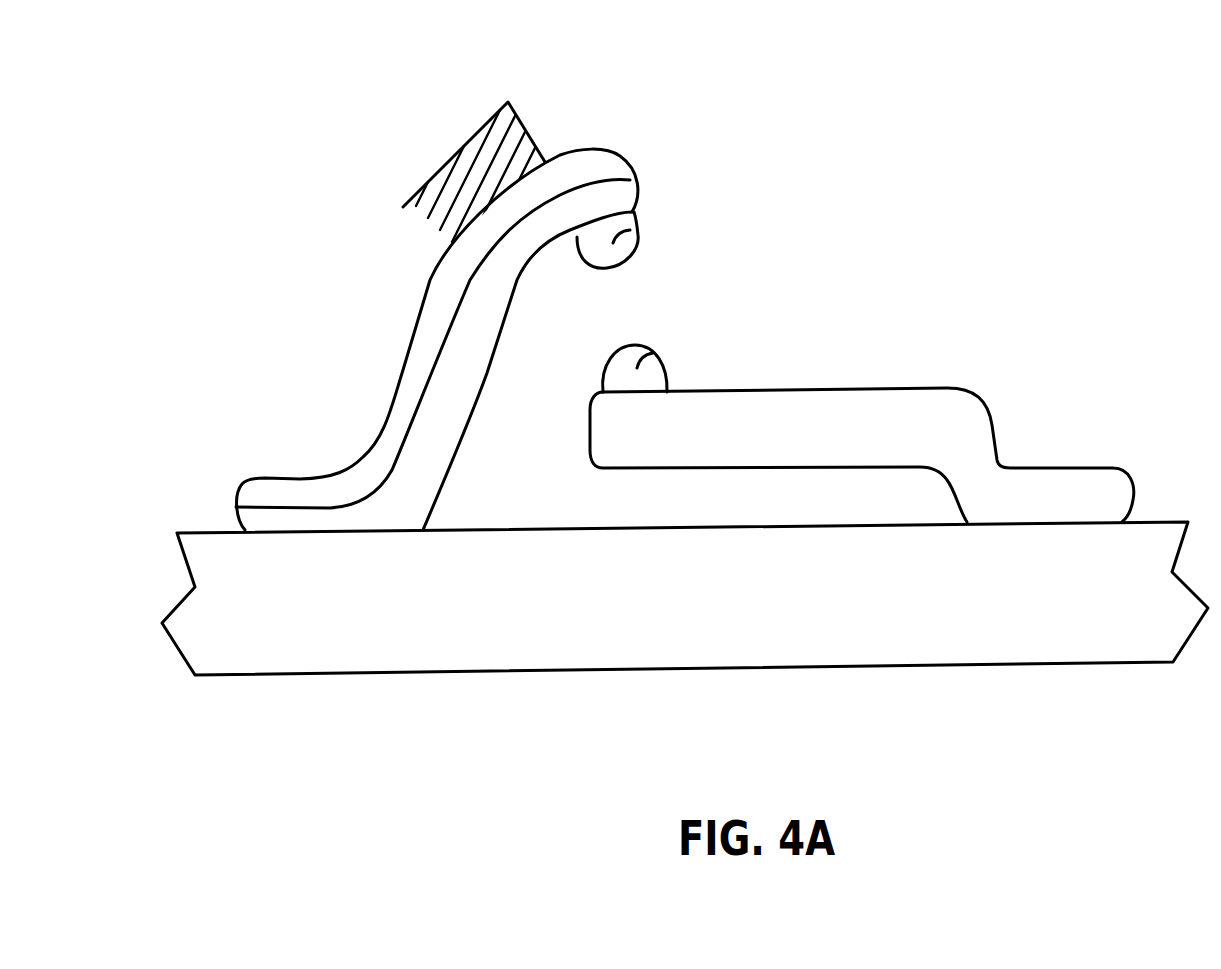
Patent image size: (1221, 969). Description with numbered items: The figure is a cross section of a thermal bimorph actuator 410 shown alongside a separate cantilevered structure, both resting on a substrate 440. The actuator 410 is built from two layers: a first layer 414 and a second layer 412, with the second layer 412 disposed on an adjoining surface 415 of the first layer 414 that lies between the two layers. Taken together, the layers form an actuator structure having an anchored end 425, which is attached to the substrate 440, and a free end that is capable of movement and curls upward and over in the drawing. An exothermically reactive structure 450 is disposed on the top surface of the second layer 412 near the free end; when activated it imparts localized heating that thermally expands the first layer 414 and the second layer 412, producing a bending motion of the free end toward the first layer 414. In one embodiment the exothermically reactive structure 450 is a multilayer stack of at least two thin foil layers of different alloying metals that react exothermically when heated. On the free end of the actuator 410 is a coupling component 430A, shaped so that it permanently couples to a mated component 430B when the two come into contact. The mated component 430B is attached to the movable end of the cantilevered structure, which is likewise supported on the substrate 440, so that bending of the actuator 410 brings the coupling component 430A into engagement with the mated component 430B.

The thermal bimorph actuator 410 is at (467, 288).
The second layer 412 is at (423, 352).
The first layer 414 is at (440, 448).
The adjoining surface 415 is at (357, 480).
The anchored end 425 is at (425, 548).
The coupling component 430A is at (640, 237).
The mated component 430B is at (647, 353).
The substrate 440 is at (877, 640).
The exothermically reactive structure 450 is at (447, 152).